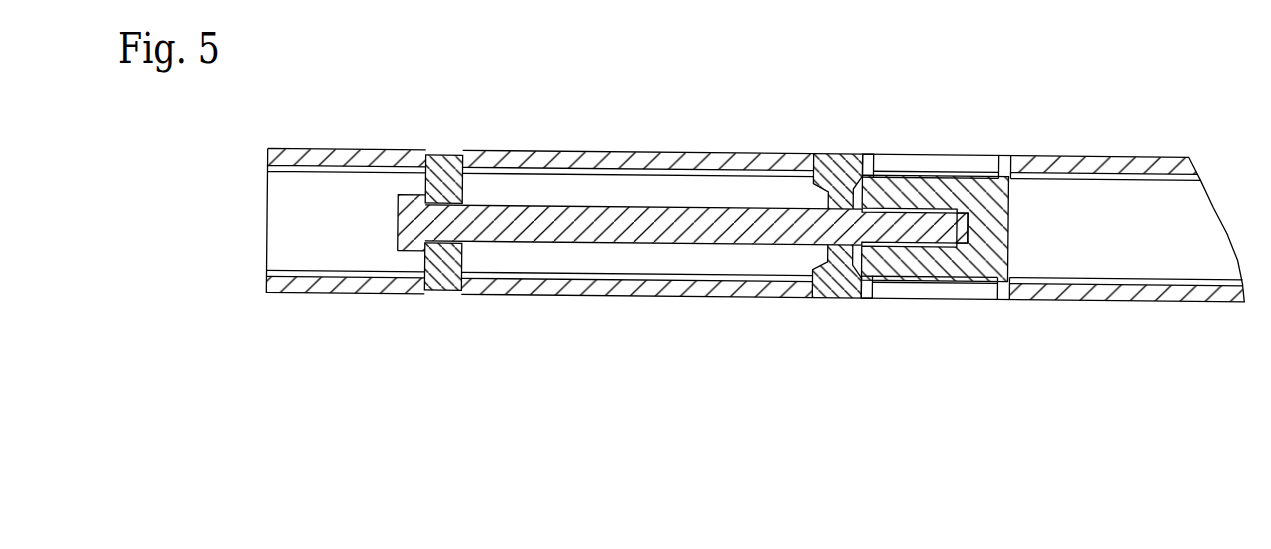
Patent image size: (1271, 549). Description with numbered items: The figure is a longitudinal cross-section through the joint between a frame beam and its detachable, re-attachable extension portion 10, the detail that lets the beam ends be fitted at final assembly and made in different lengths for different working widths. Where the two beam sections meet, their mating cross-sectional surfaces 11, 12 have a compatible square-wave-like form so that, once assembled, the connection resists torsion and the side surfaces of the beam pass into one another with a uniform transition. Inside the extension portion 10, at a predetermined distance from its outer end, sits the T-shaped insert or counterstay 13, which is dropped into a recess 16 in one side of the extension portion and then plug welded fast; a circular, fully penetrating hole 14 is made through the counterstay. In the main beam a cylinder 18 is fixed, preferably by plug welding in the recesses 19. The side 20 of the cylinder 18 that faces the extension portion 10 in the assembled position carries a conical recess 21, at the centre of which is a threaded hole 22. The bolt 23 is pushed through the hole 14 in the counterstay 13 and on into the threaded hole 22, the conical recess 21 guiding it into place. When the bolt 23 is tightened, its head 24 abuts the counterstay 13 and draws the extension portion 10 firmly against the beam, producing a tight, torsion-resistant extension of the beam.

The extension portion 10 is at (705, 152).
The cross-sectional surface 11 is at (811, 300).
The cross-sectional surface 12 is at (991, 274).
The counterstay 13 is at (450, 152).
The hole 14 is at (433, 204).
The recess 16 is at (428, 152).
The cylinder 18 is at (1013, 206).
The recesses 19 is at (870, 156).
The side of the cylinder 20 is at (848, 173).
The conical recess 21 is at (851, 300).
The threaded hole 22 is at (977, 205).
The bolt 23 is at (648, 208).
The head of the bolt 24 is at (400, 246).